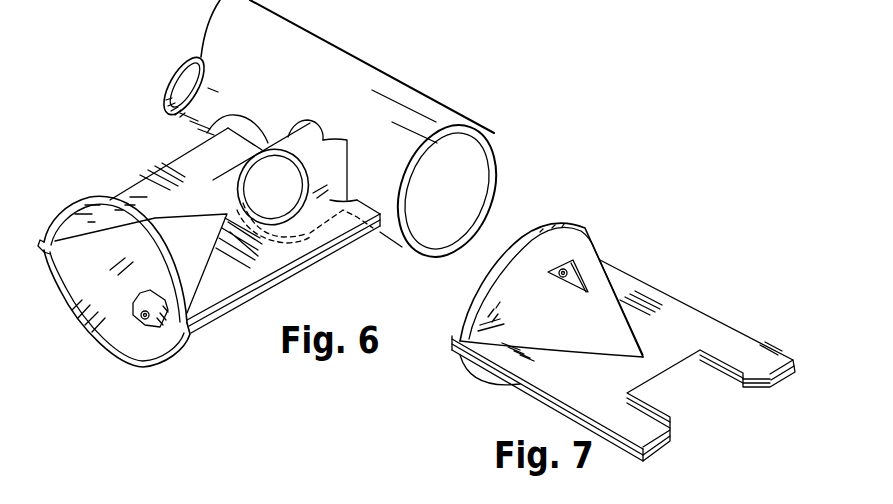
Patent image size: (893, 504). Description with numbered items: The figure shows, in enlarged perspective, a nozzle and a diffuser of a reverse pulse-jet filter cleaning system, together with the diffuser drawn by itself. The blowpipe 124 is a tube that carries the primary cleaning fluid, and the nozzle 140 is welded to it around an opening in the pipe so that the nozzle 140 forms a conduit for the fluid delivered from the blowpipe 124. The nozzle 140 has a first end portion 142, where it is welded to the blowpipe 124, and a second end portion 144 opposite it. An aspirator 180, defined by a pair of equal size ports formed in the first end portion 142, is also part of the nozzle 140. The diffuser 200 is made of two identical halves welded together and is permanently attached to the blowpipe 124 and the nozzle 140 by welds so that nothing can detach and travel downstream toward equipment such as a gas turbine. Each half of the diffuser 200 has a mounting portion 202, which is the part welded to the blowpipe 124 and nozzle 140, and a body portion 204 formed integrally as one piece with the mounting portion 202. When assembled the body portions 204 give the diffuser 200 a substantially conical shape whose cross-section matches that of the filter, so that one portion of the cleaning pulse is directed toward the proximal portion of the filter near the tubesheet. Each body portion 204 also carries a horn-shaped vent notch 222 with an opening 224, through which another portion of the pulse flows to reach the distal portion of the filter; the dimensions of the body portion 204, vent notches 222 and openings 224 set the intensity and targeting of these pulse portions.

In FIG. 6, the blowpipe 124 is at (343, 70).
In FIG. 6, the nozzle 140 is at (327, 163).
In FIG. 6, the first end portion 142 is at (338, 140).
In FIG. 6, the second end portion 144 is at (207, 125).
In FIG. 6, the aspirator 180 is at (306, 130).
In FIG. 6, the diffuser 200 is at (209, 263).
In FIG. 7, the diffuser 200 is at (606, 323).
In FIG. 6, the mounting portion 202 is at (256, 304).
In FIG. 7, the mounting portion 202 is at (678, 310).
In FIG. 6, the body portion 204 is at (158, 341).
In FIG. 7, the body portion 204 is at (498, 290).
In FIG. 6, the vent notch 222 is at (170, 197).
In FIG. 7, the vent notch 222 is at (578, 288).
In FIG. 6, the opening 224 is at (145, 318).
In FIG. 7, the opening 224 is at (578, 261).